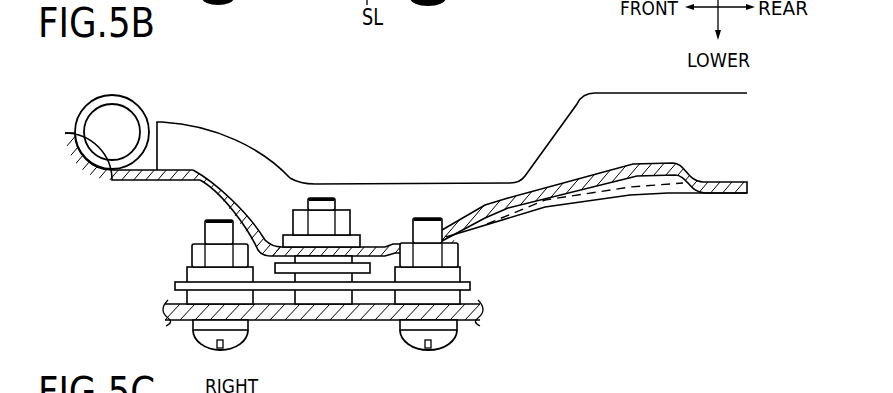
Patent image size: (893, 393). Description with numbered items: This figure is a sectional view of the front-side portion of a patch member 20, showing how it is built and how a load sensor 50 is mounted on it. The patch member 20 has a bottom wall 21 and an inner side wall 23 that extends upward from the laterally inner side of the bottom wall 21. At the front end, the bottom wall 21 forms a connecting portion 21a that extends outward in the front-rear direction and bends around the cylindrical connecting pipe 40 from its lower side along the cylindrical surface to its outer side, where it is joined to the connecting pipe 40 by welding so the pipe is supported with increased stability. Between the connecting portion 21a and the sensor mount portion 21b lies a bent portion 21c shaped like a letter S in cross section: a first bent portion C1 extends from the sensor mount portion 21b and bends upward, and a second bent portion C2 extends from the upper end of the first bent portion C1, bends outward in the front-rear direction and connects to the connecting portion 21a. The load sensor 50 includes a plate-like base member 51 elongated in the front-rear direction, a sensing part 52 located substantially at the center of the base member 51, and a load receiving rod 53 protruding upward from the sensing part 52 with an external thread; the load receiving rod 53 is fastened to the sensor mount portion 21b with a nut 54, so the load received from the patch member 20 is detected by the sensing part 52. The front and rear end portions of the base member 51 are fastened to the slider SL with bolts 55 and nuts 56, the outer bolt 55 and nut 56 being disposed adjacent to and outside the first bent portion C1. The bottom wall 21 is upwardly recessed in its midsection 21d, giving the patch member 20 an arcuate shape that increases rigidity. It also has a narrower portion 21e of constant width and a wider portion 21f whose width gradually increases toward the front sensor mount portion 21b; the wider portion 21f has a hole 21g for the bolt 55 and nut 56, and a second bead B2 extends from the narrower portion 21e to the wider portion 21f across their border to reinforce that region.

The patch member 20 is at (604, 86).
The bottom wall 21 is at (413, 200).
The connecting portion 21a is at (90, 178).
The sensor mount portion 21b is at (356, 237).
The bent portion 21c is at (237, 184).
The midsection 21d is at (720, 195).
The narrower portion 21e is at (612, 200).
The wider portion 21f is at (393, 238).
The hole 21g is at (455, 226).
The inner side wall 23 is at (195, 133).
The connecting pipe 40 is at (124, 97).
The load sensor 50 is at (168, 286).
The base member 51 is at (322, 310).
The sensing part 52 is at (332, 270).
The load receiving rod 53 is at (320, 200).
The nut 54 is at (302, 218).
The bolt 55 is at (213, 228).
The nut 56 is at (197, 250).
The second bead B2 is at (577, 180).
The first bent portion C1 is at (267, 250).
The second bent portion C2 is at (218, 175).
The slider SL is at (470, 323).